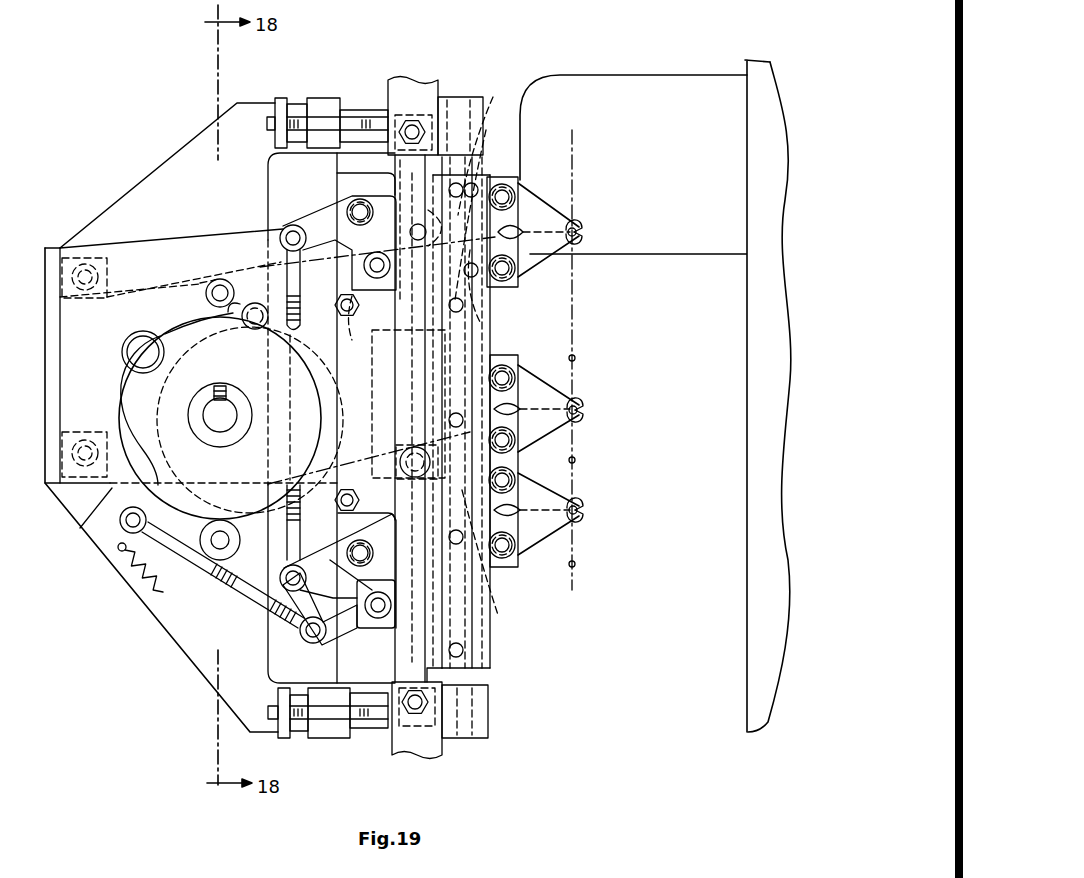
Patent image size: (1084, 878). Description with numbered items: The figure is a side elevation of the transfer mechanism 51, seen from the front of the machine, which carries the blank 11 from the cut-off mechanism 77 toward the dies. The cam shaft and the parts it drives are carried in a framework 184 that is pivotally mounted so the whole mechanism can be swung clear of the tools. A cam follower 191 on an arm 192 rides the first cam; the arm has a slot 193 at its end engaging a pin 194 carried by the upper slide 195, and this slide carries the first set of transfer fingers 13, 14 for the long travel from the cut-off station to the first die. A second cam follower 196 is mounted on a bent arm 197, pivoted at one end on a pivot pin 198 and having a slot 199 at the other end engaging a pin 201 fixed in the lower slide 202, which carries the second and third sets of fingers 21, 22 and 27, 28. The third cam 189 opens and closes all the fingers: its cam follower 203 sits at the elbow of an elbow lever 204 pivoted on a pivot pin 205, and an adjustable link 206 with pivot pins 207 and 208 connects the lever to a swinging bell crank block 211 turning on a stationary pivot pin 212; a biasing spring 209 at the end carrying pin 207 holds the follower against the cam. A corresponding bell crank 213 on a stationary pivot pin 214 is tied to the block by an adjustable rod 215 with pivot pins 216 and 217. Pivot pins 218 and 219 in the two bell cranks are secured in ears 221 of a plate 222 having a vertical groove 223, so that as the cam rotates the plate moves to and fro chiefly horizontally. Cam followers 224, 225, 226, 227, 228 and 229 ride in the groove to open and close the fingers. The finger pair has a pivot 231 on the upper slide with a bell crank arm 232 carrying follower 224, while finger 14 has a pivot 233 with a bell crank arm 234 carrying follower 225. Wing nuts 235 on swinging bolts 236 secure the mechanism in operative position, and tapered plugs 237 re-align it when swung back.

The blank 11 is at (575, 226).
The transfer finger 13 is at (582, 222).
The transfer finger 14 is at (582, 240).
The transfer finger 21 is at (583, 402).
The transfer finger 22 is at (583, 418).
The transfer finger 27 is at (583, 504).
The transfer finger 28 is at (583, 518).
The transfer mechanism 51 is at (176, 138).
The cut-off mechanism 77 is at (676, 98).
The framework 184 is at (212, 662).
The cam 189 is at (150, 388).
The cam follower 191 is at (205, 296).
The arm 192 is at (160, 250).
The slot 193 is at (415, 310).
The pin 194 is at (448, 100).
The upper slide 195 is at (510, 282).
The cam follower 196 is at (240, 522).
The bent arm 197 is at (110, 492).
The pivot pin 198 is at (92, 445).
The slot 199 is at (400, 445).
The pin 201 is at (415, 446).
The lower slide 202 is at (510, 568).
The cam follower 203 is at (135, 340).
The elbow lever 204 is at (121, 365).
The pivot pin 205 is at (250, 330).
The adjustable link 206 is at (180, 572).
The pivot pin 207 is at (118, 548).
The pivot pin 208 is at (305, 644).
The biasing spring 209 is at (150, 598).
The bell crank block 211 is at (322, 648).
The stationary pivot pin 212 is at (357, 515).
The bell crank 213 is at (326, 205).
The stationary pivot pin 214 is at (350, 200).
The adjustable link 215 is at (300, 330).
The pivot pin 216 is at (297, 566).
The pivot pin 217 is at (295, 225).
The pivot pin 218 is at (372, 620).
The pivot pin 219 is at (368, 278).
The ears 221 is at (356, 330).
The plate 222 is at (492, 657).
The vertical groove 223 is at (484, 623).
The cam follower 224 is at (492, 146).
The cam follower 225 is at (490, 300).
The cam follower 226 is at (500, 352).
The cam follower 227 is at (522, 462).
The cam follower 228 is at (522, 480).
The cam follower 229 is at (500, 553).
The pivot 231 is at (518, 278).
The bell crank arm 232 is at (488, 210).
The pivot 233 is at (518, 178).
The bell crank arm 234 is at (522, 213).
The wing nuts 235 is at (283, 97).
The swinging bolts 236 is at (333, 122).
The tapered plugs 237 is at (372, 742).